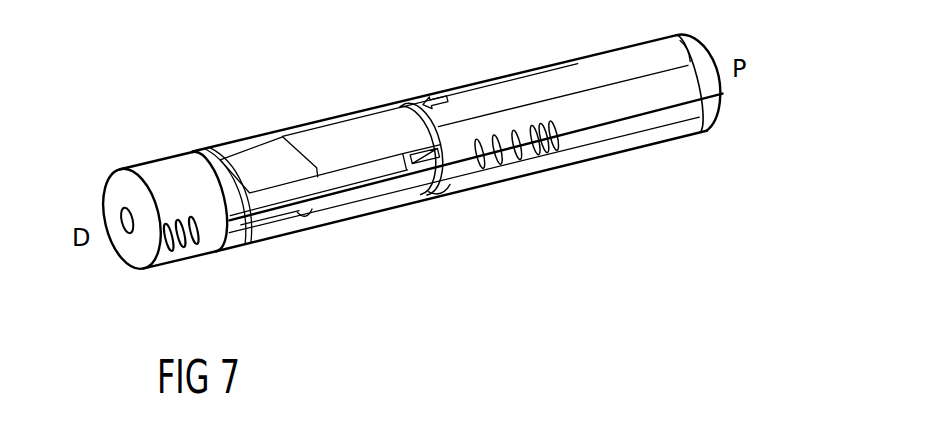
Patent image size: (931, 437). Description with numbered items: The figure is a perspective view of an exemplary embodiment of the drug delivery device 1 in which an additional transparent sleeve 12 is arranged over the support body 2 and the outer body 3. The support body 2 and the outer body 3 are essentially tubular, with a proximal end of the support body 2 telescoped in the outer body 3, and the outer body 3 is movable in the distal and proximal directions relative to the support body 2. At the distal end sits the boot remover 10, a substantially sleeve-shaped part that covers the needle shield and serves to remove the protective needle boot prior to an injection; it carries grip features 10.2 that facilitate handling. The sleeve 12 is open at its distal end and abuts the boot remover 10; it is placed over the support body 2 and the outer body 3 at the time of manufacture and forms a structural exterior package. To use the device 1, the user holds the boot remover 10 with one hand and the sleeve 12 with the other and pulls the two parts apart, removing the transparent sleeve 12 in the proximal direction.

The drug delivery device 1 is at (412, 166).
The support body 2 is at (332, 143).
The outer body 3 is at (618, 115).
The boot remover 10 is at (168, 178).
The grip features 10.2 is at (197, 243).
The transparent sleeve 12 is at (383, 103).